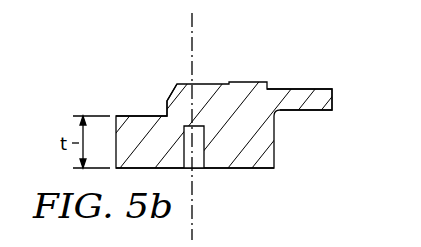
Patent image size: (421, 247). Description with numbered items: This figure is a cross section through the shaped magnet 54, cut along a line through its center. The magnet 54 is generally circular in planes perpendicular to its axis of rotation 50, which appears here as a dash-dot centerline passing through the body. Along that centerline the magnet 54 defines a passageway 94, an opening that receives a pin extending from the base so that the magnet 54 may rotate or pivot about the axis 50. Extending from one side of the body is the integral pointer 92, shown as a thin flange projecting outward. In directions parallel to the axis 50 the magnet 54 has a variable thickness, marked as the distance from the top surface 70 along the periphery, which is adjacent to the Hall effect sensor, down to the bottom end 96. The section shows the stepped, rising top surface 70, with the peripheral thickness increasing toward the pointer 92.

The axis of rotation 50 is at (193, 22).
The shaped magnet 54 is at (170, 66).
The top surface 70 is at (147, 115).
The pointer 92 is at (318, 88).
The passageway 94 is at (209, 140).
The bottom end 96 is at (251, 169).